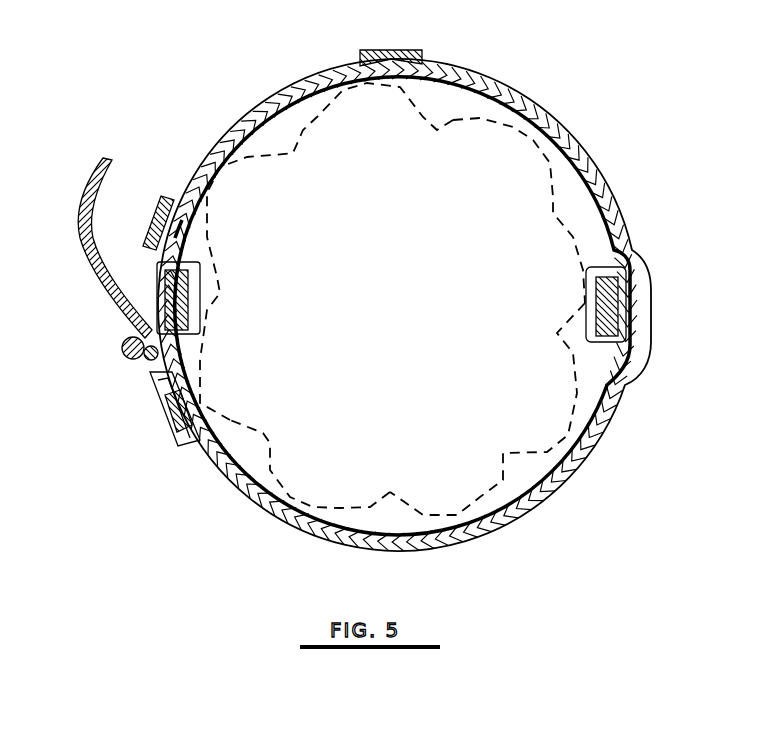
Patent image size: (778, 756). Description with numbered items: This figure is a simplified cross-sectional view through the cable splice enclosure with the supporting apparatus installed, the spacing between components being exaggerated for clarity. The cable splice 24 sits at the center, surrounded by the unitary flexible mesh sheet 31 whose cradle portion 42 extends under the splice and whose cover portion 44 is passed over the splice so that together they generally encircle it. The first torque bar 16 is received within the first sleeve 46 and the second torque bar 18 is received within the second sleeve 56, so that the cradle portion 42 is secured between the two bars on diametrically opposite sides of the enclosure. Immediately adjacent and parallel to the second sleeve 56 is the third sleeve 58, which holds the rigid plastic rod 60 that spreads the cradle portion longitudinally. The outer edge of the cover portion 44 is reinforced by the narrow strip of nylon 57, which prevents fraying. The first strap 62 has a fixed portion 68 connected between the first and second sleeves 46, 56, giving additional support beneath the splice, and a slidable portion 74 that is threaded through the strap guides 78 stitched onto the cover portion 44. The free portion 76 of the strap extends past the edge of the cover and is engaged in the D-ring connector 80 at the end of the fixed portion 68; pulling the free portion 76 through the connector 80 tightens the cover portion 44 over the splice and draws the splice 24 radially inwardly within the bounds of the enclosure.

The first torque bar 16 is at (600, 300).
The second torque bar 18 is at (176, 300).
The cable splice 24 is at (576, 222).
The sheet portion 31 is at (531, 470).
The cradle portion 42 is at (371, 523).
The cover portion 44 is at (437, 92).
The first sleeve 46 is at (590, 341).
The second sleeve 56 is at (205, 268).
The narrow strip of nylon 57 is at (200, 228).
The third sleeve 58 is at (166, 430).
The rod 60 is at (182, 416).
The first strap 62 is at (150, 414).
The fixed portion 68 is at (330, 547).
The slidable portion 74 is at (247, 106).
The free portion 76 is at (100, 170).
The strap guides 78 is at (376, 48).
The D-ring connector 80 is at (124, 338).